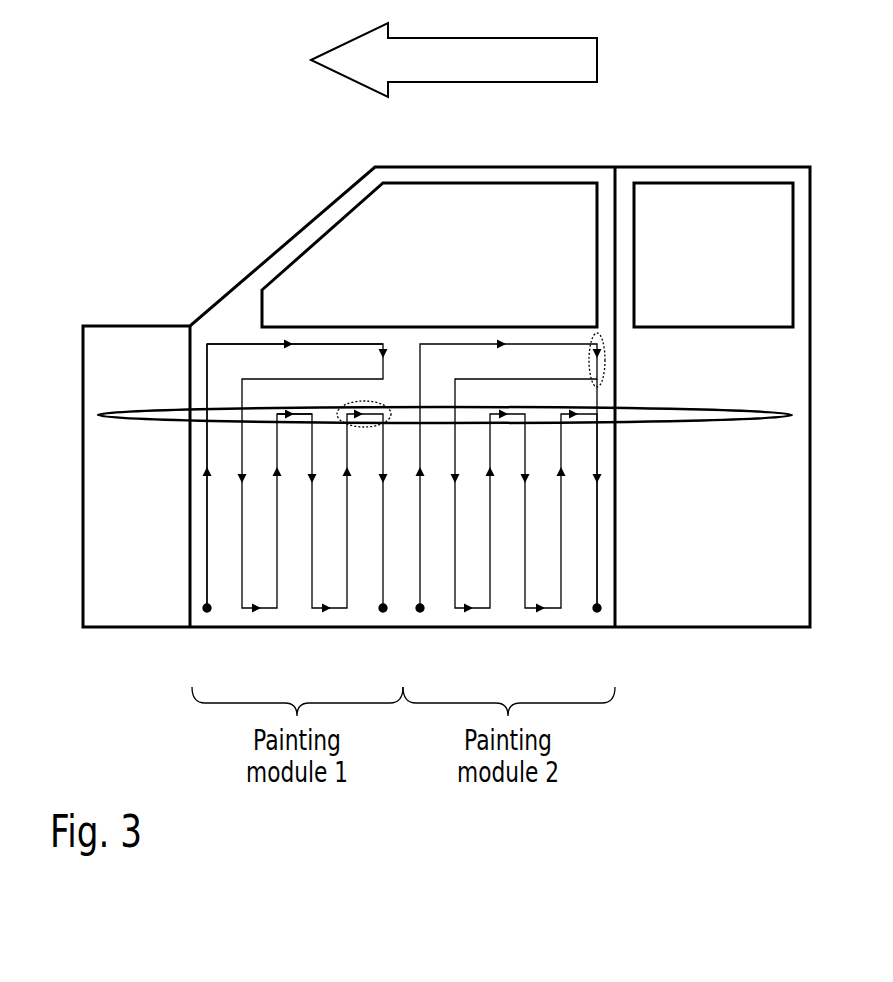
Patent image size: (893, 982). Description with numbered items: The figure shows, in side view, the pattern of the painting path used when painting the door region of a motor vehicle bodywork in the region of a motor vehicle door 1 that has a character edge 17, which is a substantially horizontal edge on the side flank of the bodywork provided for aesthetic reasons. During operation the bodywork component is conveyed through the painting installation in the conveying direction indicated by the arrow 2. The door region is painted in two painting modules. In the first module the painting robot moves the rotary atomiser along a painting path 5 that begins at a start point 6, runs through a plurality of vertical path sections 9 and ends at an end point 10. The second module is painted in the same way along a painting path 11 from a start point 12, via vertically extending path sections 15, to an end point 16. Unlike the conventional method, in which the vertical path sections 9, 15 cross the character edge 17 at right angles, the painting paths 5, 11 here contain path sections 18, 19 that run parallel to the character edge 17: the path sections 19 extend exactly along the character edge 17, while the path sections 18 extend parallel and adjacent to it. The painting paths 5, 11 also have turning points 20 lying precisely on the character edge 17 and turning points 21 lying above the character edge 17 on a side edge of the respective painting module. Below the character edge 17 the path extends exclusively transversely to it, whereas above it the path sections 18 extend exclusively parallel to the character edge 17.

The motor vehicle door 1 is at (298, 228).
The arrow 2 is at (346, 40).
The painting path 5 is at (198, 505).
The start point 6 is at (204, 607).
The vertical path sections 9 is at (207, 558).
The end point 10 is at (383, 612).
The painting path 11 is at (606, 517).
The start point 12 is at (420, 612).
The vertical path sections 15 is at (600, 434).
The end point 16 is at (601, 607).
The character edge 17 is at (170, 412).
The path sections 18 is at (338, 344).
The path sections 19 is at (298, 412).
The turning points 20 is at (378, 404).
The turning points 21 is at (606, 362).